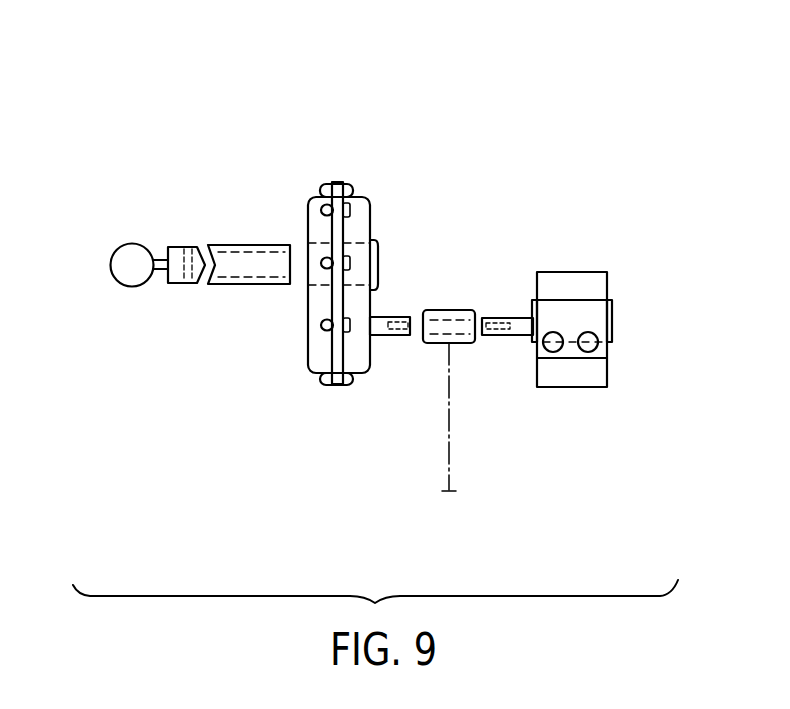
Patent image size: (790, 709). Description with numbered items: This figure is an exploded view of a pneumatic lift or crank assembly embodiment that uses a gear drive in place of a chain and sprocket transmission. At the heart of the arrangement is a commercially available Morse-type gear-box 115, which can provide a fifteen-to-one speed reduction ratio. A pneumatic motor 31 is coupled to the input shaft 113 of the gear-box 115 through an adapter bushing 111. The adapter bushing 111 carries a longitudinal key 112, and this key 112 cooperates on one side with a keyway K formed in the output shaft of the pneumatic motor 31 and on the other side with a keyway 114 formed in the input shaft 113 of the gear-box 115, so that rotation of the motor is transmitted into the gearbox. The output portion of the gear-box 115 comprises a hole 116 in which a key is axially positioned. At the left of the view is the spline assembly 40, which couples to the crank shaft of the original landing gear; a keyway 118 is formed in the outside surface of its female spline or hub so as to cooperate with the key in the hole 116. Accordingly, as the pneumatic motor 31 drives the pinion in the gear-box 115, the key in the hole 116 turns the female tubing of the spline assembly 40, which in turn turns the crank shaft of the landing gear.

The spline assembly 40 is at (172, 227).
The keyway 118 is at (253, 243).
The hole 116 is at (320, 253).
The Morse-type gear-box 115 is at (370, 203).
The input shaft 113 is at (385, 337).
The keyway 114 is at (410, 318).
The longitudinal key 112 is at (453, 312).
The keyway K is at (498, 320).
The pneumatic motor 31 is at (608, 363).
The adapter bushing 111 is at (449, 491).